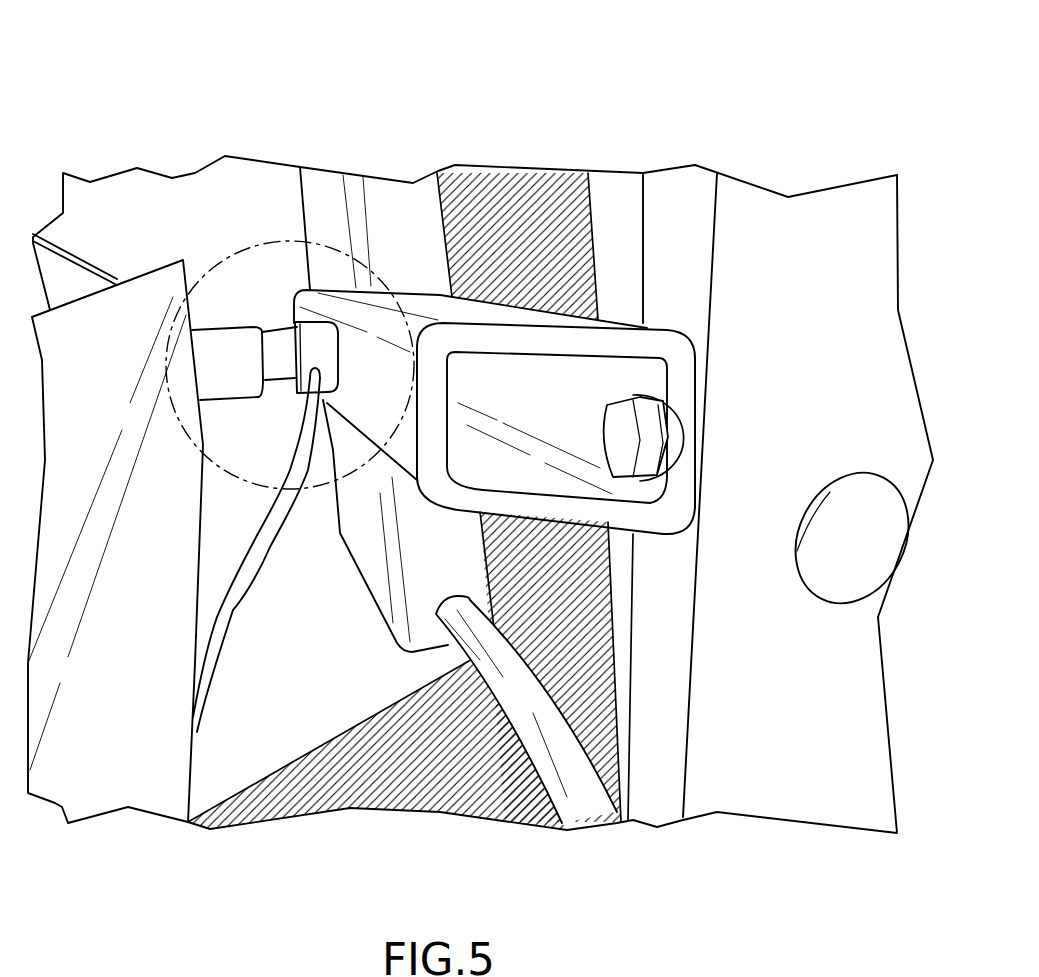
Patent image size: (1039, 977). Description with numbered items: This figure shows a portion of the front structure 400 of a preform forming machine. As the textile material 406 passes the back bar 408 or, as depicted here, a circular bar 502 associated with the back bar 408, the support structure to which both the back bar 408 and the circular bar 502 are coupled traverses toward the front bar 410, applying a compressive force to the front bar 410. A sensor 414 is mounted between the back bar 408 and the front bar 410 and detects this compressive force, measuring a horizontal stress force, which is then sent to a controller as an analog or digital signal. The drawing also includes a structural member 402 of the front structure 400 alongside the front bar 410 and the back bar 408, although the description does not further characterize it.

The front structure 400 is at (237, 120).
The structural member 402 is at (823, 400).
The textile material 406 is at (313, 795).
The back bar 408 is at (553, 415).
The front bar 410 is at (84, 503).
The sensor 414 is at (341, 250).
The circular bar 502 is at (605, 817).